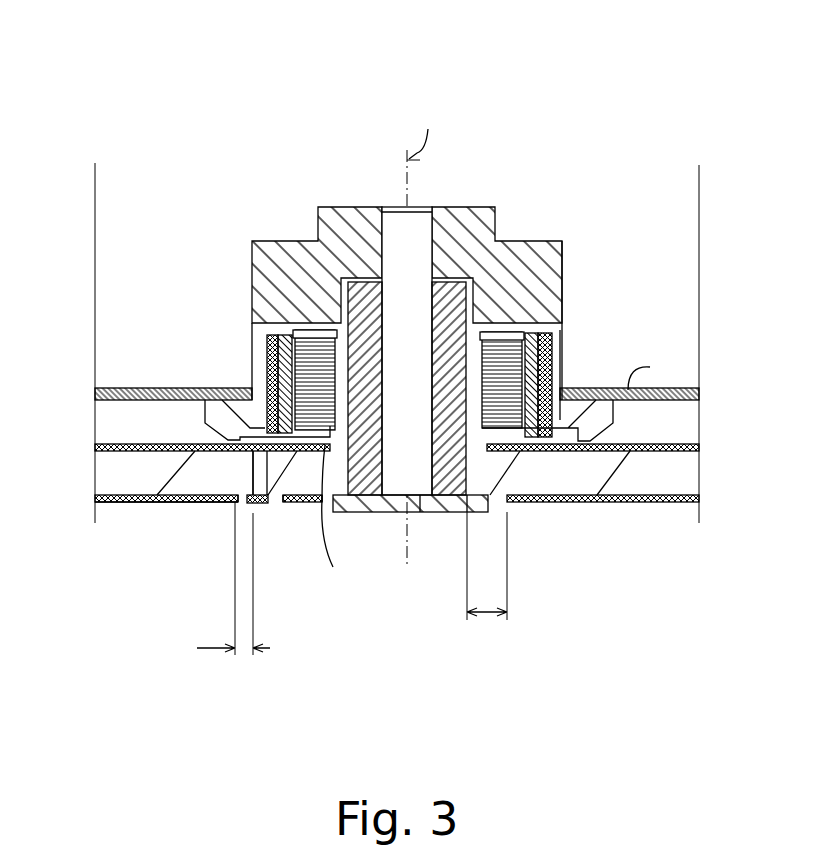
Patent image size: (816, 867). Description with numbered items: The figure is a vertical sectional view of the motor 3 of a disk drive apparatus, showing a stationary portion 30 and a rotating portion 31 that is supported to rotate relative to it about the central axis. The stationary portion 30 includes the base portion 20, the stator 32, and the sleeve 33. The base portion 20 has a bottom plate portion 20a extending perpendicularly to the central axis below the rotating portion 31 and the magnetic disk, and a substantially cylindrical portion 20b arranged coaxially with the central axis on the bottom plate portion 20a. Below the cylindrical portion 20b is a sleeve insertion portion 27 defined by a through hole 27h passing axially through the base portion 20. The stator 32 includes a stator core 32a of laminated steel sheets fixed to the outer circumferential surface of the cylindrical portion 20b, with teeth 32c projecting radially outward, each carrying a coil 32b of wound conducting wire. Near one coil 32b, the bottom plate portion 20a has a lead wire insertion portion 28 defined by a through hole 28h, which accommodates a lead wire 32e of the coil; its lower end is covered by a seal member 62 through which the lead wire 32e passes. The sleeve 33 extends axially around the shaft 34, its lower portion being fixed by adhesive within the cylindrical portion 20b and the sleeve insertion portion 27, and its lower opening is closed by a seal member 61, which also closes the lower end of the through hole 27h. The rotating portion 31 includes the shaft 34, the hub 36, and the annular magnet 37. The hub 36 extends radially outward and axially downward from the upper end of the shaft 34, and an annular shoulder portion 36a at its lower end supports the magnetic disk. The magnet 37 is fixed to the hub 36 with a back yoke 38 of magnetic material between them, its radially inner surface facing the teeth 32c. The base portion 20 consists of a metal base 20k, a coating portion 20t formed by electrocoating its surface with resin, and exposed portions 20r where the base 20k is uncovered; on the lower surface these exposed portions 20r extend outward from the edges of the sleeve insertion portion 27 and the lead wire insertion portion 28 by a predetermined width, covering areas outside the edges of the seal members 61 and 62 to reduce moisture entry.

The motor 3 is at (408, 348).
The base portion 20 is at (416, 458).
The bottom plate portion 20a is at (655, 447).
The base 20k is at (668, 482).
The coating portion 20t is at (128, 502).
The cylindrical portion 20b is at (300, 503).
The exposed portions 20r is at (320, 533).
The sleeve insertion portion 27 is at (345, 497).
The through hole 27h is at (470, 512).
The lead wire insertion portion 28 is at (225, 499).
The through hole 28h is at (247, 463).
The stationary portion 30 is at (507, 500).
The rotating portion 31 is at (570, 298).
The stator 32 is at (413, 505).
The stator core 32a is at (605, 460).
The coils 32b is at (520, 455).
The teeth 32c is at (565, 455).
The lead wire 32e is at (240, 440).
The sleeve 33 is at (368, 512).
The shaft 34 is at (396, 213).
The hub 36 is at (252, 283).
The shoulder portion 36a is at (562, 386).
The magnet 37 is at (285, 355).
The back yoke 38 is at (270, 340).
The seal member 61 is at (425, 513).
The seal member 62 is at (258, 503).